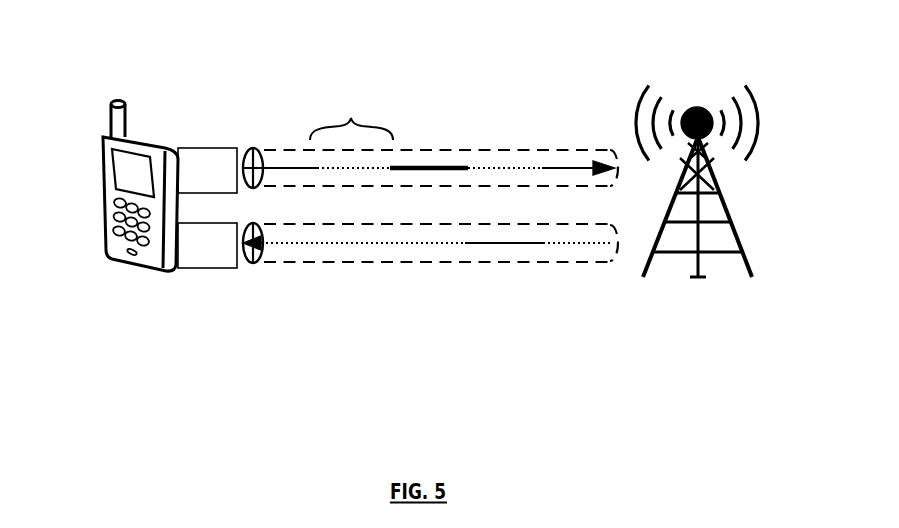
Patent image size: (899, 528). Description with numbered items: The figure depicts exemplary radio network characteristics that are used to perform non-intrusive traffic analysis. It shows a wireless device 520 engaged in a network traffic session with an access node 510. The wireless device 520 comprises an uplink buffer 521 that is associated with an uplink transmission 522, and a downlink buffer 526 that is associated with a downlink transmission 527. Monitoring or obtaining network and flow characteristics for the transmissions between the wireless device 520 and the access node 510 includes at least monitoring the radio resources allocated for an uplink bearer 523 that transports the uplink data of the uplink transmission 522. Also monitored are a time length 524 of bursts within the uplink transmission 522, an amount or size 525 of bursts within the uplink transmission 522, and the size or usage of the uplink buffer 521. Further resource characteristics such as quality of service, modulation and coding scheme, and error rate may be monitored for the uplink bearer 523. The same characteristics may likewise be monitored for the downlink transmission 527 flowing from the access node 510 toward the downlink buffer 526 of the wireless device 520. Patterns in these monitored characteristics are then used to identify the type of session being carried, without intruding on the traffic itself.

The access node 510 is at (738, 252).
The wireless device 520 is at (100, 137).
The uplink buffer 521 is at (220, 148).
The uplink transmission 522 is at (580, 166).
The uplink bearer 523 is at (270, 150).
The time length 524 is at (342, 106).
The size 525 is at (457, 166).
The downlink buffer 526 is at (220, 268).
The downlink transmission 527 is at (300, 244).